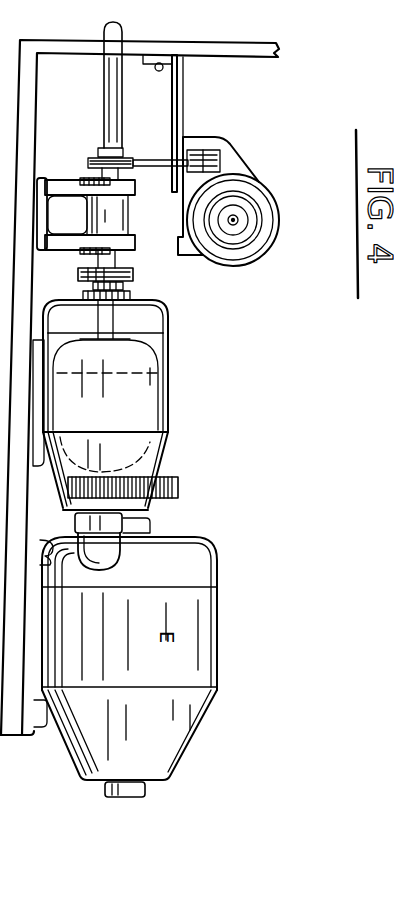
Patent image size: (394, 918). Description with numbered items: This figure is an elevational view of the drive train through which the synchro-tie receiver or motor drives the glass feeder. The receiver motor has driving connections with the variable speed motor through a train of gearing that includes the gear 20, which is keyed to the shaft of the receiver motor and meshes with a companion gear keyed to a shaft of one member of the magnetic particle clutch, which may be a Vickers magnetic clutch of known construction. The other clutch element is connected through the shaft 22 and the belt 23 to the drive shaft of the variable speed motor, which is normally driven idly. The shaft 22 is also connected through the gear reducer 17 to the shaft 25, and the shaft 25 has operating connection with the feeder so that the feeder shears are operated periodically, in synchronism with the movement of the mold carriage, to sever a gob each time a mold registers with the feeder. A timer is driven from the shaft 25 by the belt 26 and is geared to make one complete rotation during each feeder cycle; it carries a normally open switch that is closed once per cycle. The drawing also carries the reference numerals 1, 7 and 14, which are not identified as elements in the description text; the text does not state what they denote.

The drive shaft 1 is at (233, 228).
The pulley 7 is at (270, 250).
The upper vessel 14 is at (158, 385).
The gear reducer 17 is at (123, 218).
The gear 20 is at (178, 497).
The shaft 22 is at (160, 298).
The belt 23 is at (133, 275).
The shaft 25 is at (110, 123).
The belt 26 is at (157, 162).